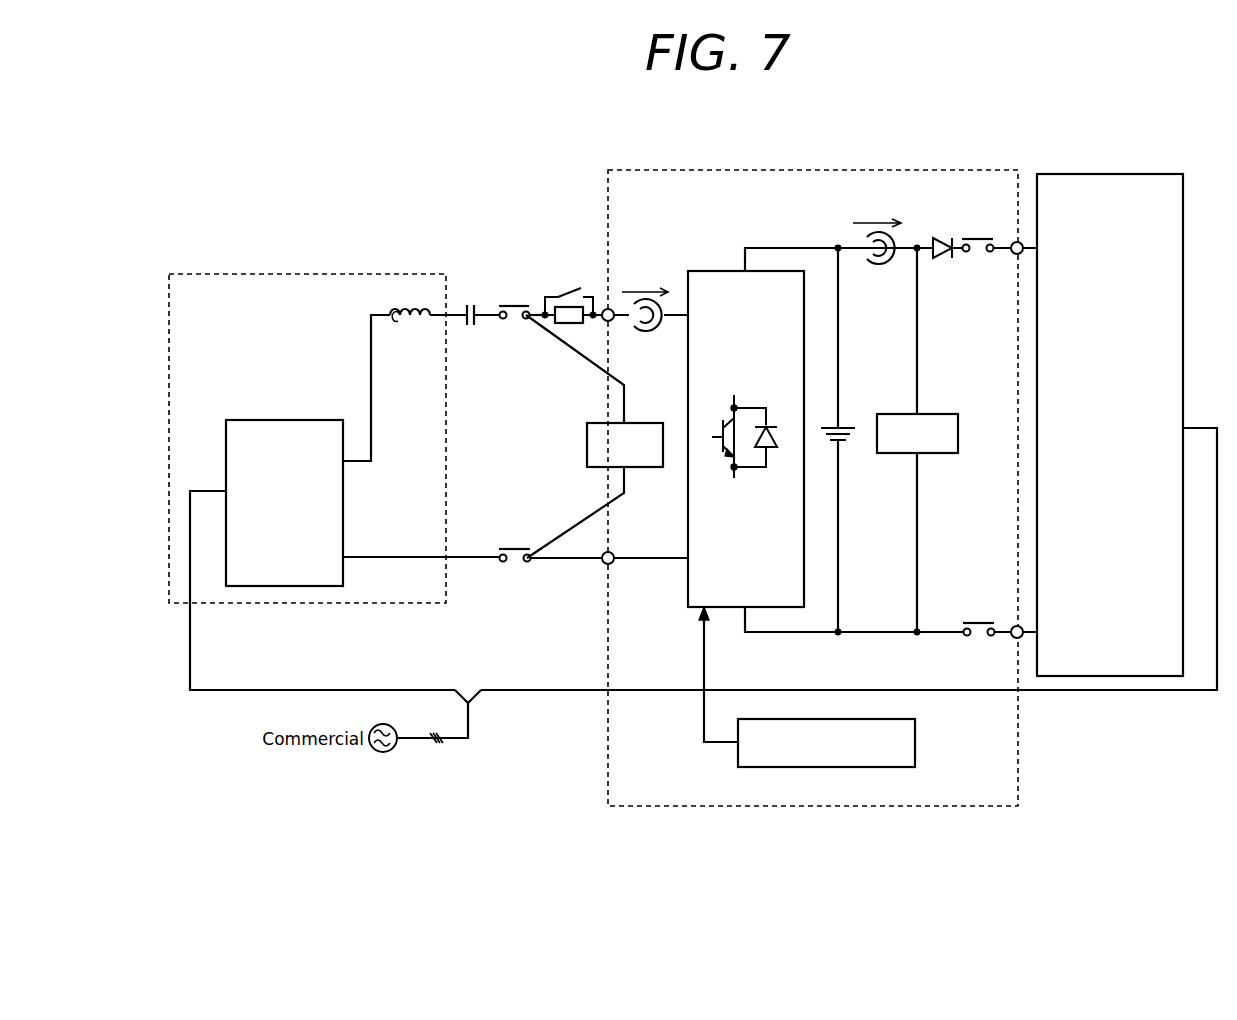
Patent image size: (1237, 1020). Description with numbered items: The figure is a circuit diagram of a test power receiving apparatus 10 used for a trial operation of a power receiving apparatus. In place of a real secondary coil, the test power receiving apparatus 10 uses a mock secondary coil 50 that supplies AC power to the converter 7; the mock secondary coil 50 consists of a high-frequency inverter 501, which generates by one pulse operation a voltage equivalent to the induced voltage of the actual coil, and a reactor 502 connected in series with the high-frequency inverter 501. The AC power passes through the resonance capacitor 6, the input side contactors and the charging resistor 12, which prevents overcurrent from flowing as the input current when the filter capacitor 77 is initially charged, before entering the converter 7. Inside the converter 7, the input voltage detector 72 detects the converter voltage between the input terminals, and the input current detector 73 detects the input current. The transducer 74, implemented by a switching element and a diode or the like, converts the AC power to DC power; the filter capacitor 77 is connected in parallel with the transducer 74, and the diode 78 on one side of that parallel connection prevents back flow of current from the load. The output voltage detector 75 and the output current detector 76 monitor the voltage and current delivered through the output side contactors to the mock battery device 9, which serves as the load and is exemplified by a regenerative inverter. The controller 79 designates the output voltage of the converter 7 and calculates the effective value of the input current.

The converter 7 is at (818, 169).
The mock battery device 9 is at (1110, 172).
The test power receiving apparatus 10 is at (413, 203).
The mock secondary coil 50 is at (301, 274).
The high-frequency inverter 501 is at (280, 420).
The reactor 502 is at (418, 321).
The resonance capacitor 6 is at (469, 306).
The charging resistor 12 is at (570, 290).
The input voltage detector 72 is at (587, 445).
The input current detector 73 is at (650, 333).
The transducer 74 is at (717, 271).
The output voltage detector 75 is at (958, 433).
The output current detector 76 is at (878, 265).
The filter capacitor 77 is at (854, 425).
The diode 78 is at (941, 262).
The controller 79 is at (917, 742).